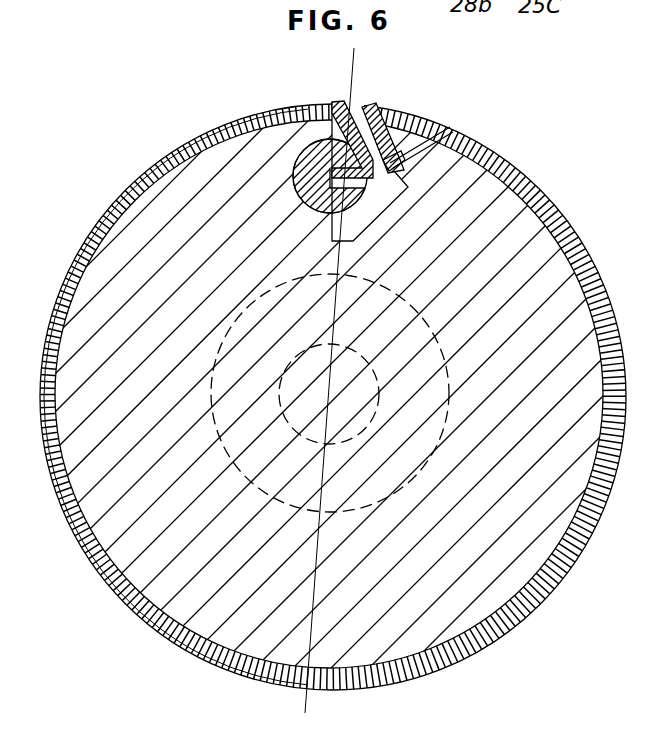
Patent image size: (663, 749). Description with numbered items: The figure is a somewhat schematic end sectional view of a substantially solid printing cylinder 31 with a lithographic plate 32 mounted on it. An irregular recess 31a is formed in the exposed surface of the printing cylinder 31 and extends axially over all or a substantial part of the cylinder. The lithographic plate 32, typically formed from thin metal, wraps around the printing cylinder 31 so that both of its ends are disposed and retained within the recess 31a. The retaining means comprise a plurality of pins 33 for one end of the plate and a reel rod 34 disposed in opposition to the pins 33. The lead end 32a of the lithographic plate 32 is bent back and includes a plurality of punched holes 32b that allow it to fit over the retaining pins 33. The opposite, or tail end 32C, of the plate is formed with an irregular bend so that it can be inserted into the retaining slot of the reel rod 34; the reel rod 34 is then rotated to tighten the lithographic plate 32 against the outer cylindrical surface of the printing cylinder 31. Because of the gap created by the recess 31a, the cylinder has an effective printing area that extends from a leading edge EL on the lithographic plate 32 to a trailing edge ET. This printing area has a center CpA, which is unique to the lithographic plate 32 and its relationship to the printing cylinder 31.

The printing cylinder 31 is at (515, 238).
The irregular recess 31a is at (367, 213).
The lithographic plate 32 is at (117, 195).
The lead end 32a is at (405, 125).
The punched holes 32b is at (398, 158).
The tail end 32C is at (348, 112).
The pins 33 is at (438, 131).
The reel rod 34 is at (300, 193).
The trailing edge ET is at (340, 106).
The leading edge EL is at (363, 112).
The center of printing area CpA is at (305, 688).